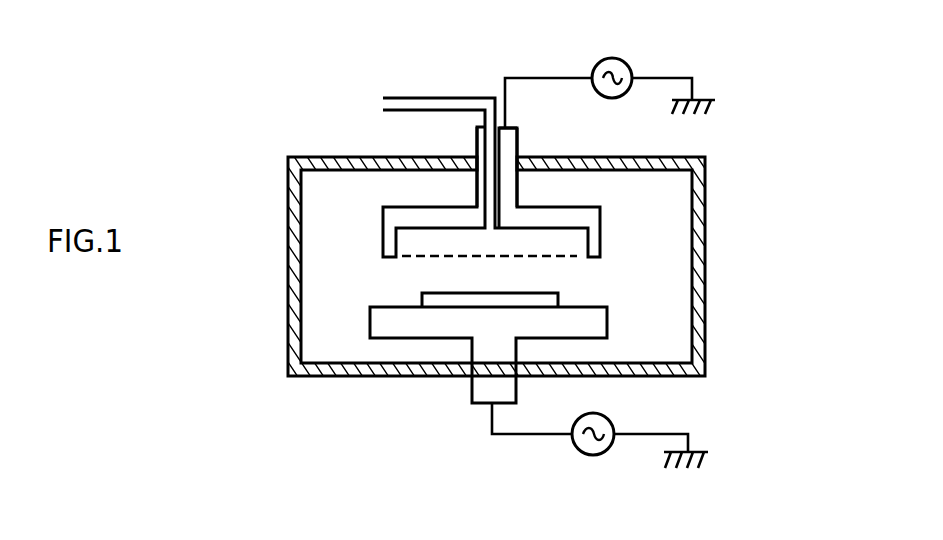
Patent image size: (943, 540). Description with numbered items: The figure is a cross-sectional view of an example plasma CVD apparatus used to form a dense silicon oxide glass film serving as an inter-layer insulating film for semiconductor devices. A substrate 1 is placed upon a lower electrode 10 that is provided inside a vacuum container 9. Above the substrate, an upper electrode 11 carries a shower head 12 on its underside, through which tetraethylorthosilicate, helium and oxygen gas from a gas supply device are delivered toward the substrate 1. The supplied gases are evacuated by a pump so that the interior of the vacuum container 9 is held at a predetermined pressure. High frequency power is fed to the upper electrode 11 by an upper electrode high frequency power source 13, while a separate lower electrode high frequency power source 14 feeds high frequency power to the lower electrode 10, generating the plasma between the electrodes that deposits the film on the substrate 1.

The substrate 1 is at (558, 293).
The vacuum container 9 is at (704, 210).
The lower electrode 10 is at (607, 335).
The upper electrode 11 is at (518, 145).
The shower head 12 is at (413, 257).
The upper electrode high frequency power source 13 is at (622, 60).
The lower electrode high frequency power source 14 is at (578, 455).